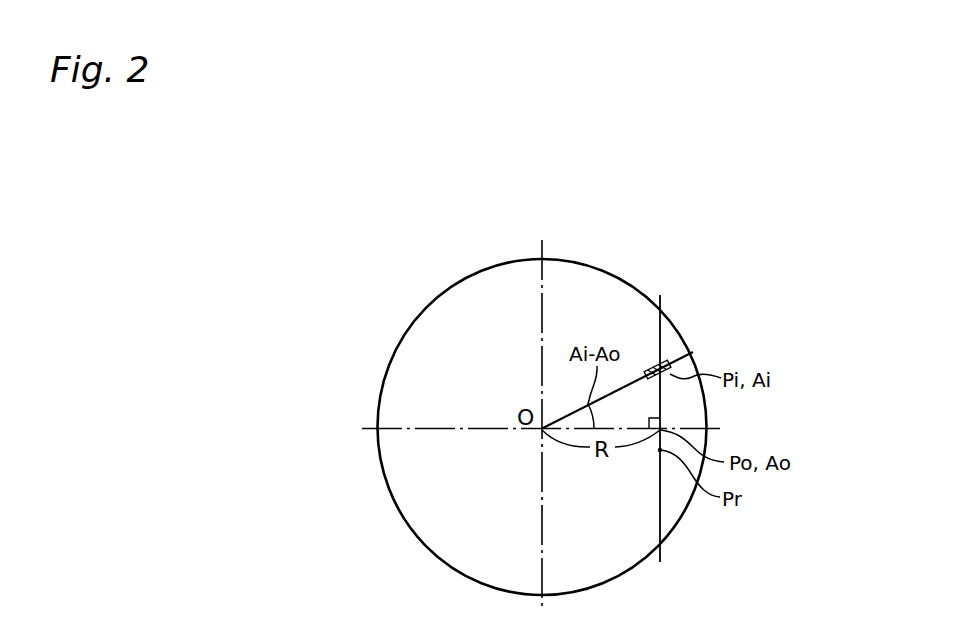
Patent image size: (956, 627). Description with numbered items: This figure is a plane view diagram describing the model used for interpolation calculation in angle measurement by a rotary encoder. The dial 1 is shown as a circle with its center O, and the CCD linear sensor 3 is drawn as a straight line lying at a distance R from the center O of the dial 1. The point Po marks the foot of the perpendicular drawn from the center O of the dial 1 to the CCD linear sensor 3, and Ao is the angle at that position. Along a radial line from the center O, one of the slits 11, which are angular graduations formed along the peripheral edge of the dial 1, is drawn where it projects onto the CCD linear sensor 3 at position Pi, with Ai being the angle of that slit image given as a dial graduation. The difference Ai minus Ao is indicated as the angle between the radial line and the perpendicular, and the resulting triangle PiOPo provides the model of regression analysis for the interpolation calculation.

The dial 1 is at (451, 288).
The CCD linear sensor 3 is at (662, 298).
The slits 11 is at (671, 360).